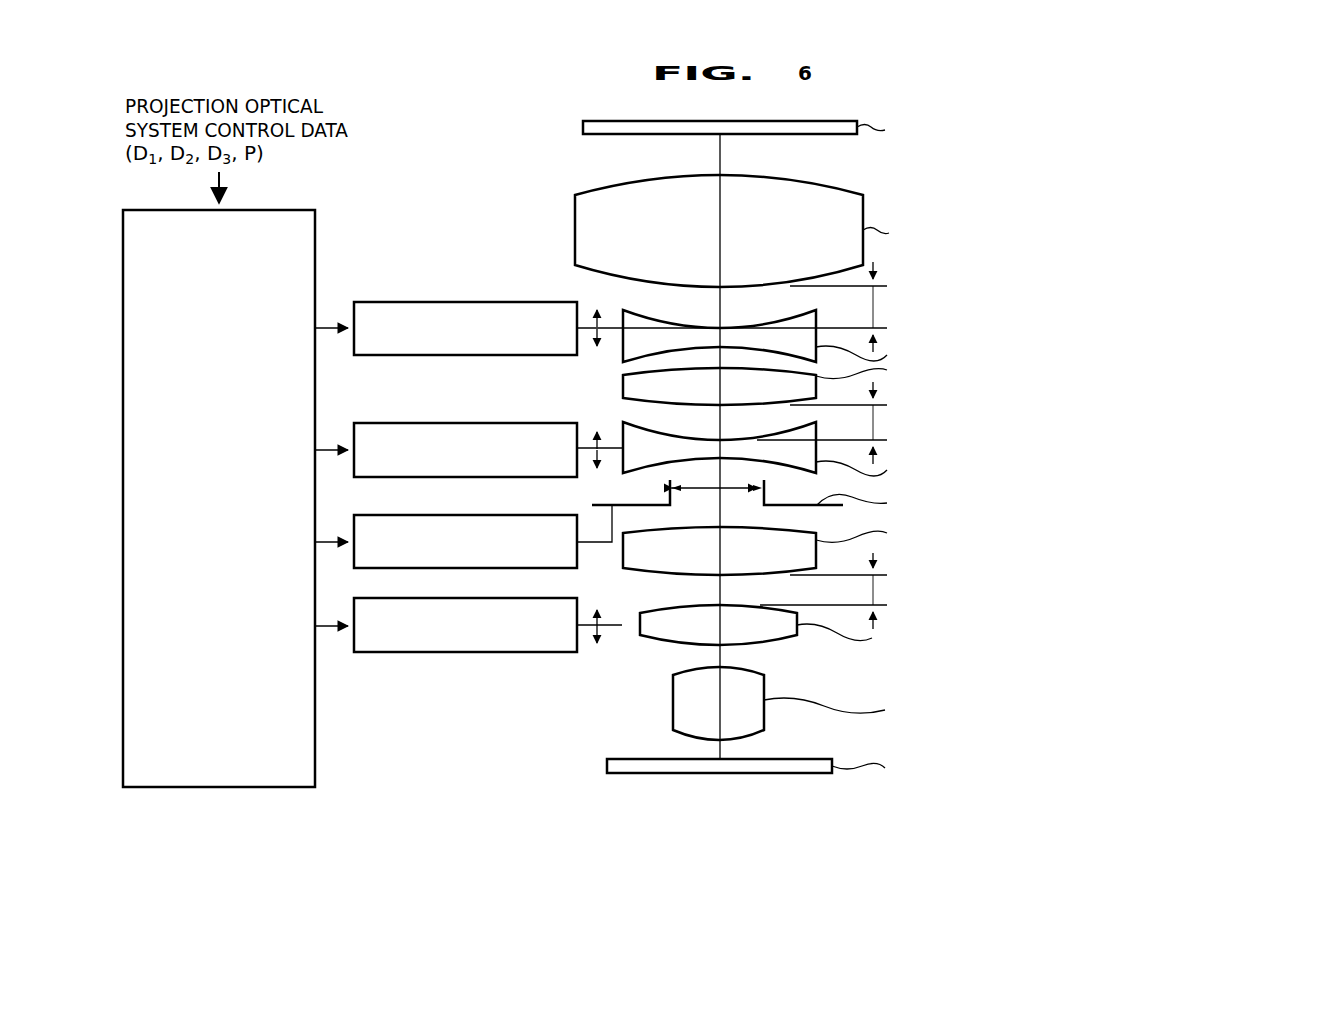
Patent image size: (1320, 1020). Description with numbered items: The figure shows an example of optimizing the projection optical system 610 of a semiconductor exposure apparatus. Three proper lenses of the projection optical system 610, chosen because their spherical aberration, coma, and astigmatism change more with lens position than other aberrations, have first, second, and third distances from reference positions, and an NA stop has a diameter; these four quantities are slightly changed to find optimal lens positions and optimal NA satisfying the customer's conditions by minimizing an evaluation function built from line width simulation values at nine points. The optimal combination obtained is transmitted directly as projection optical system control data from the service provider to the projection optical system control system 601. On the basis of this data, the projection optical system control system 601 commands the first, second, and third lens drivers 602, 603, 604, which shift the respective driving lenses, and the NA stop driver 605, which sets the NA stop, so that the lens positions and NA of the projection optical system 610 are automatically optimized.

The projection optical system control system 601 is at (315, 738).
The first lens driver 602 is at (463, 300).
The second lens driver 603 is at (463, 422).
The third lens driver 604 is at (456, 653).
The NA stop driver 605 is at (457, 516).
The projection optical system 610 is at (1228, 123).